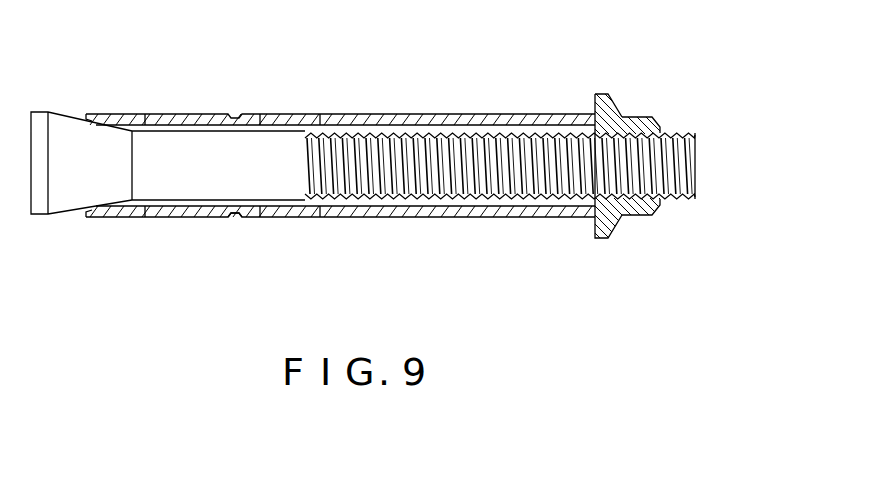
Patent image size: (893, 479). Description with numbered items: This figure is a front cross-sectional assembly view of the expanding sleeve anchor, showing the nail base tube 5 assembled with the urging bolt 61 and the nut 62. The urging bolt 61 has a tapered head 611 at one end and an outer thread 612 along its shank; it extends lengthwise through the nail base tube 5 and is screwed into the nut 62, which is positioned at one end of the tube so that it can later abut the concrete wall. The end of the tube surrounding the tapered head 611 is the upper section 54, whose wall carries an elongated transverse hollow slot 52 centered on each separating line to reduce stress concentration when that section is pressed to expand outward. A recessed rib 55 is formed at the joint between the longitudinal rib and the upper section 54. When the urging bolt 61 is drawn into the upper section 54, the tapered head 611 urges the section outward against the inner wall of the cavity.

The nail base tube 5 is at (340, 143).
The elongated transverse hollow slot 52 is at (153, 113).
The upper section 54 is at (220, 222).
The recessed rib 55 is at (232, 217).
The urging bolt 61 is at (698, 177).
The nut 62 is at (627, 110).
The tapered head 611 is at (67, 200).
The outer thread 612 is at (446, 180).